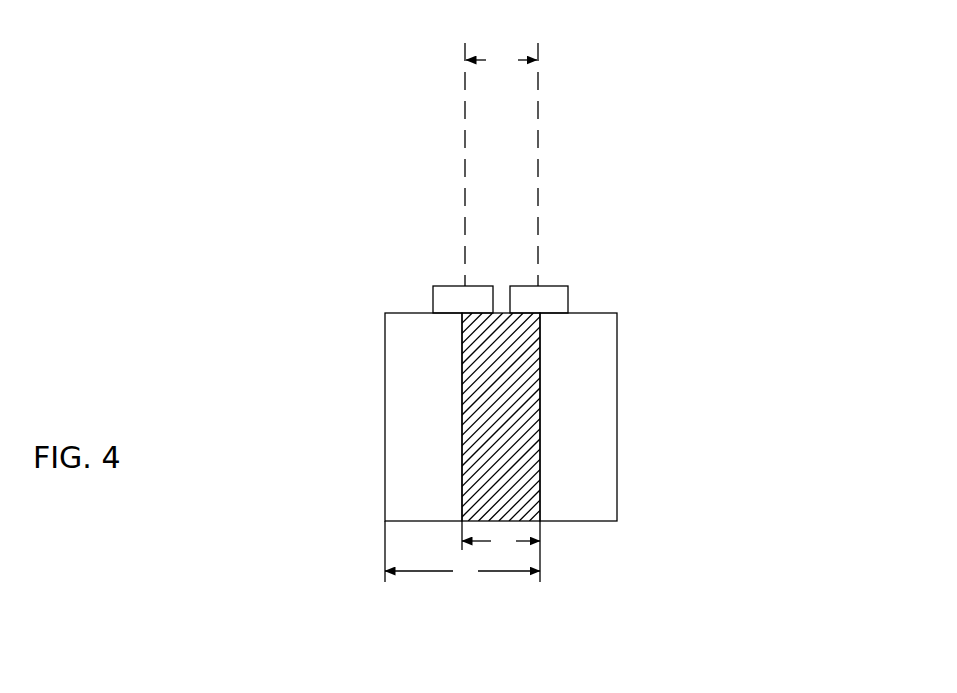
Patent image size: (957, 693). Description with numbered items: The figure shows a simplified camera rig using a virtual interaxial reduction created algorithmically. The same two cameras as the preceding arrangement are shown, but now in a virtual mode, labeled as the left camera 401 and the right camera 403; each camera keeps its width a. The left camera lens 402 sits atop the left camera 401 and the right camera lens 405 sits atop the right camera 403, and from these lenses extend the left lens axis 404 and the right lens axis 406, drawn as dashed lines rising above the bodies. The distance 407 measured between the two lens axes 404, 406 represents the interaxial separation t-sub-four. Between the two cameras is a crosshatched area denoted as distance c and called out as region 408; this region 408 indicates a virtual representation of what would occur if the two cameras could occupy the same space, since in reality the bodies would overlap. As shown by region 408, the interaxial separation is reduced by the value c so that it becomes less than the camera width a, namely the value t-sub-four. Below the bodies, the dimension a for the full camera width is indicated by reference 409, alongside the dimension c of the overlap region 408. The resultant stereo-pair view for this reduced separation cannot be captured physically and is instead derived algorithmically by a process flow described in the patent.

The left camera 401 is at (383, 375).
The left camera lens 402 is at (441, 284).
The right camera 403 is at (619, 403).
The left lens axis 404 is at (462, 94).
The right camera lens 405 is at (556, 284).
The right lens axis 406 is at (541, 94).
The distance 407 is at (501, 42).
The region 408 is at (551, 541).
The overall width a of component body 409 is at (513, 590).